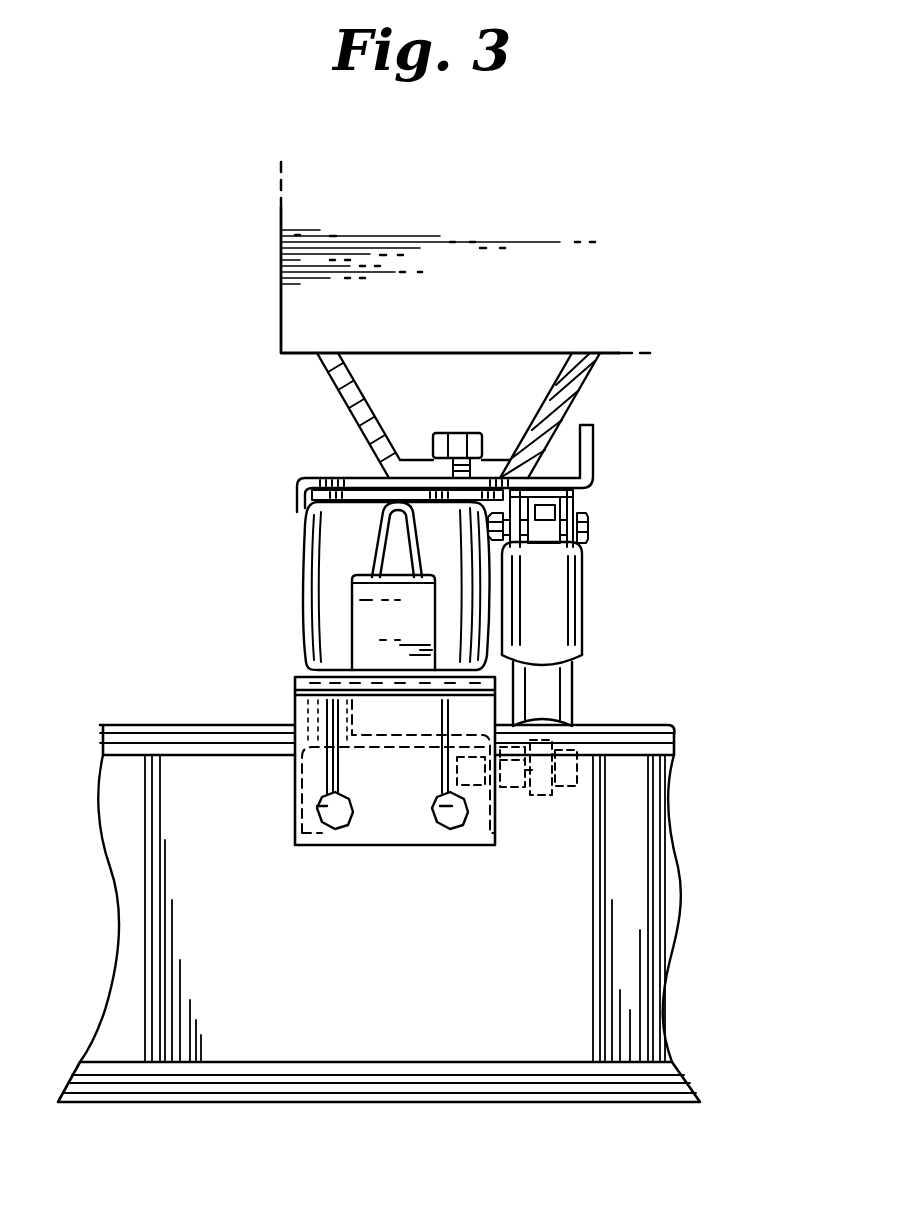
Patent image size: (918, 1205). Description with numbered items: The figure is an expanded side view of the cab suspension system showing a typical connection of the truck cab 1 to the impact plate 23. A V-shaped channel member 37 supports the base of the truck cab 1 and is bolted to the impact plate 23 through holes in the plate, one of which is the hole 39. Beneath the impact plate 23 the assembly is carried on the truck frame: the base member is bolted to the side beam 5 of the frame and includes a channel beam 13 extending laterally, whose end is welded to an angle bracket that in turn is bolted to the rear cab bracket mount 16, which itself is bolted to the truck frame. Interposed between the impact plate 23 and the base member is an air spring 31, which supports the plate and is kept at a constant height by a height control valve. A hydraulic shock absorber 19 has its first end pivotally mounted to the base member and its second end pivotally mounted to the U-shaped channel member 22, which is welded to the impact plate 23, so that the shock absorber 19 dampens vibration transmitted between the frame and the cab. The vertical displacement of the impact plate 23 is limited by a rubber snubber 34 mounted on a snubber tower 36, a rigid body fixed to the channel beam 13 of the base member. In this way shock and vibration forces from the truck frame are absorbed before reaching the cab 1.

The truck cab 1 is at (298, 302).
The side beam 5 is at (650, 865).
The channel beam 13 is at (300, 808).
The rear cab bracket mount 16 is at (408, 823).
The hydraulic shock absorber 19 is at (566, 603).
The U-shaped channel member 22 is at (577, 500).
The impact plate 23 is at (595, 456).
The air spring 31 is at (305, 633).
The rubber snubber 34 is at (378, 527).
The snubber tower 36 is at (352, 590).
The V-shaped channel member 37 is at (330, 388).
The hole 39 is at (500, 478).